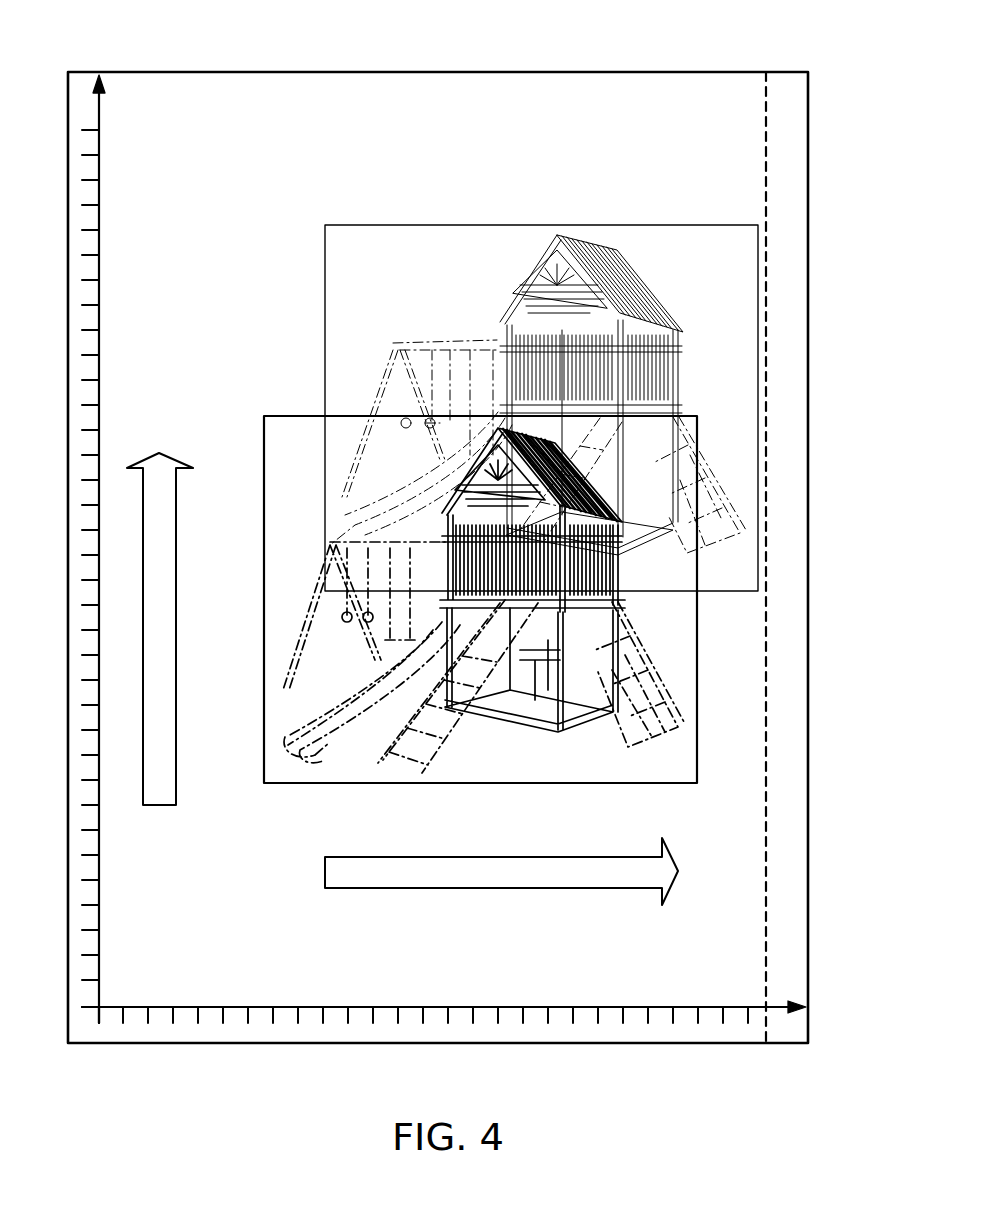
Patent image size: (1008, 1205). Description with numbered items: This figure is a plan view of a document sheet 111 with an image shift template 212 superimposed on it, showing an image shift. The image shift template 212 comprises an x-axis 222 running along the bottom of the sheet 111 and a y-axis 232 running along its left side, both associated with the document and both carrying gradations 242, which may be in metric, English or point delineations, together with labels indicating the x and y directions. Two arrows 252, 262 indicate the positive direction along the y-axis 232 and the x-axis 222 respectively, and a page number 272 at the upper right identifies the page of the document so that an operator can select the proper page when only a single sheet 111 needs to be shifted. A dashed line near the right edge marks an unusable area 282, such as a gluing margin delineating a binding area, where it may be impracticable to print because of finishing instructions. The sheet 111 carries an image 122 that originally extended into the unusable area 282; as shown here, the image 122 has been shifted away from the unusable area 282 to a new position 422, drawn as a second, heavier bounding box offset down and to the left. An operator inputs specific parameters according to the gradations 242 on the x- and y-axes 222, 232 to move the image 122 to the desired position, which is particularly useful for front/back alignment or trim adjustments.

The sheet 111 is at (283, 1056).
The image 122 is at (553, 222).
The image shift template 212 is at (60, 1017).
The x-axis 222 is at (464, 1004).
The y-axis 232 is at (99, 300).
The gradations 242 is at (221, 1032).
The arrow 252 is at (177, 620).
The arrow 262 is at (476, 855).
The page numbers 272 is at (722, 84).
The unusable area 282 is at (784, 424).
The new position 422 is at (290, 414).